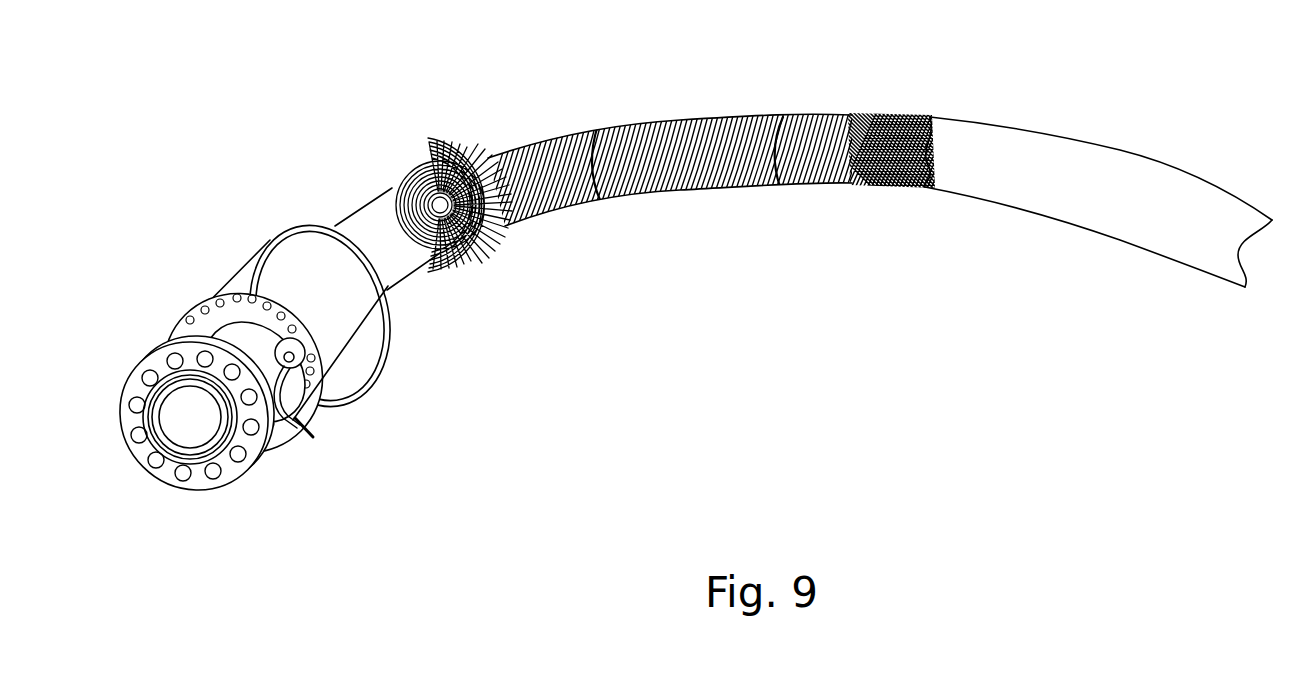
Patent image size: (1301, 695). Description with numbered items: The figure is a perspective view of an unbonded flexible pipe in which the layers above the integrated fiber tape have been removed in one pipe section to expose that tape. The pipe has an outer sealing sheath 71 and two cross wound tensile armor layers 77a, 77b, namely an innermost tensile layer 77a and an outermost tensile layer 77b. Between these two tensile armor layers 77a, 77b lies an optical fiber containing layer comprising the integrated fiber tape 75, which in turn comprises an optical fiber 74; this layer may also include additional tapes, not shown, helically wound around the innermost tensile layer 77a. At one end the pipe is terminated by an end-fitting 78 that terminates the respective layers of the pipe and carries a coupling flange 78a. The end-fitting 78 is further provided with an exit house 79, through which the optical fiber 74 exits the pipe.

The outer sealing sheath 71 is at (1068, 163).
The optical fiber 74 is at (298, 443).
The integrated fiber tape 75 is at (767, 183).
The innermost tensile layer 77a is at (703, 115).
The outermost tensile layer 77b is at (893, 115).
The end-fitting 78 is at (333, 337).
The coupling flange 78a is at (173, 360).
The exit house 79 is at (307, 360).